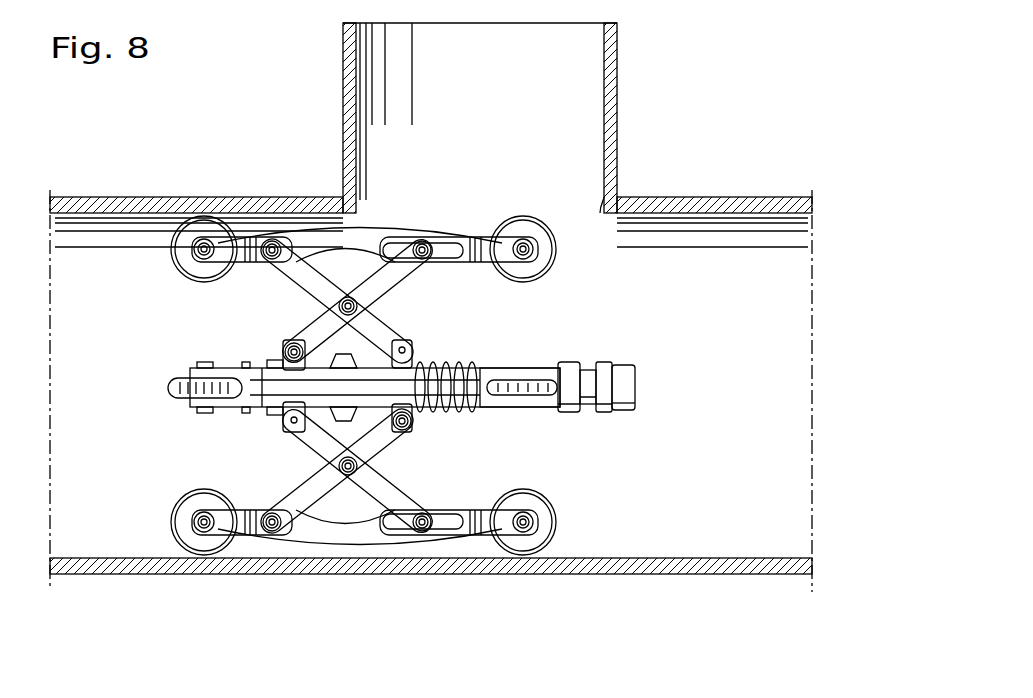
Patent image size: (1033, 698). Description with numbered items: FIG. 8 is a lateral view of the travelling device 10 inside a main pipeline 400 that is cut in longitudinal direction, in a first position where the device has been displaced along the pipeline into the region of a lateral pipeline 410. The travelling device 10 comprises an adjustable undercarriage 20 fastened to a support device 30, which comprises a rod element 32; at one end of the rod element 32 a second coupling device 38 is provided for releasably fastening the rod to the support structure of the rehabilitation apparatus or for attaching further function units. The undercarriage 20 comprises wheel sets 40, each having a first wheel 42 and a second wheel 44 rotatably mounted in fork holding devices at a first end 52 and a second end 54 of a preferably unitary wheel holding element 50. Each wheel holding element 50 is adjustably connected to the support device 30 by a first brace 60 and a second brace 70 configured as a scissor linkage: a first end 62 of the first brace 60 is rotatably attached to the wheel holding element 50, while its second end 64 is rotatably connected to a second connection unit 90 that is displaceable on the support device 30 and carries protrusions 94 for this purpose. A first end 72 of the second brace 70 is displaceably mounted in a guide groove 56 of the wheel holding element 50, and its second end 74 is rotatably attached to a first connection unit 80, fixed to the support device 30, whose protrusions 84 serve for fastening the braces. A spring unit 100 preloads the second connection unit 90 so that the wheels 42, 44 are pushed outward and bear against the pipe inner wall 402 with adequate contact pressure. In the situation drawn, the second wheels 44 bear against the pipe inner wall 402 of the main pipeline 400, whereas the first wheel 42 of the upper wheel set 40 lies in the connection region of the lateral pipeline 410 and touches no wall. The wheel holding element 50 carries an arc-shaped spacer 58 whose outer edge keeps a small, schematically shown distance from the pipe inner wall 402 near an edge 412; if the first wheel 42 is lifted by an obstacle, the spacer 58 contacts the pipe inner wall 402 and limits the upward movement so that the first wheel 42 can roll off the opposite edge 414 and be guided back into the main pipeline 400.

The travelling device 10 is at (175, 330).
The undercarriage 20 is at (528, 331).
The support device 30 is at (609, 409).
The rod element 32 is at (545, 410).
The second coupling device 38 is at (626, 360).
The wheel set 40 is at (433, 385).
The first wheel 42 is at (808, 277).
The second wheel 44 is at (171, 248).
The wheel holding element 50 is at (399, 226).
The first end 52 is at (485, 229).
The second end 54 is at (246, 226).
The guide groove 56 is at (450, 236).
The spacer 58 is at (383, 228).
The first brace 60 is at (286, 300).
The first end of the first brace 62 is at (295, 270).
The second end of the first brace 64 is at (380, 343).
The second brace 70 is at (478, 302).
The first end of the second brace 72 is at (434, 296).
The second end of the second brace 74 is at (290, 347).
The first connection unit 80 is at (256, 425).
The protrusions 84 is at (275, 358).
The second connection unit 90 is at (430, 356).
The protrusions 94 is at (435, 352).
The spring unit 100 is at (520, 418).
The main pipeline 400 is at (139, 192).
The pipe inner wall 402 is at (100, 218).
The lateral pipeline 410 is at (341, 96).
The edge 412 is at (344, 214).
The edge 414 is at (596, 208).